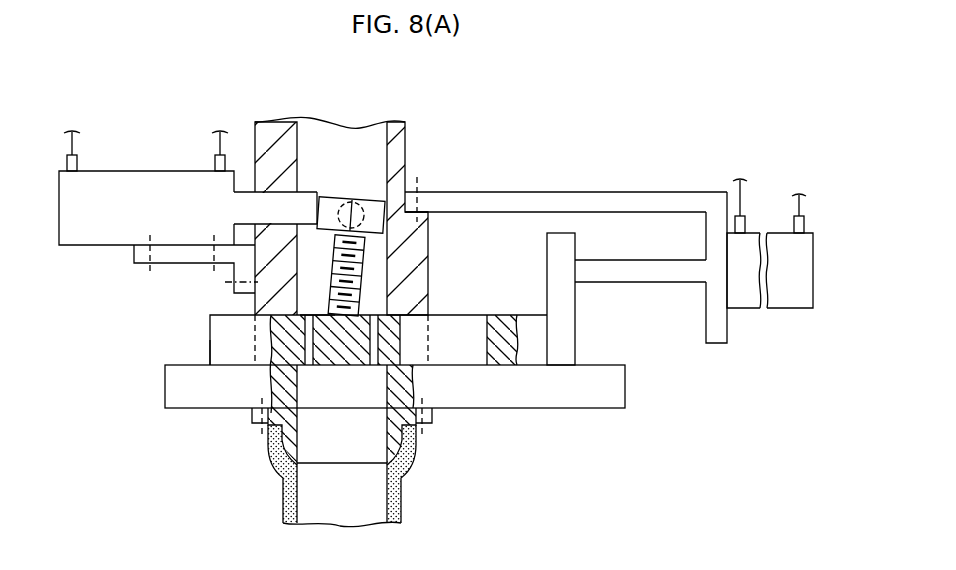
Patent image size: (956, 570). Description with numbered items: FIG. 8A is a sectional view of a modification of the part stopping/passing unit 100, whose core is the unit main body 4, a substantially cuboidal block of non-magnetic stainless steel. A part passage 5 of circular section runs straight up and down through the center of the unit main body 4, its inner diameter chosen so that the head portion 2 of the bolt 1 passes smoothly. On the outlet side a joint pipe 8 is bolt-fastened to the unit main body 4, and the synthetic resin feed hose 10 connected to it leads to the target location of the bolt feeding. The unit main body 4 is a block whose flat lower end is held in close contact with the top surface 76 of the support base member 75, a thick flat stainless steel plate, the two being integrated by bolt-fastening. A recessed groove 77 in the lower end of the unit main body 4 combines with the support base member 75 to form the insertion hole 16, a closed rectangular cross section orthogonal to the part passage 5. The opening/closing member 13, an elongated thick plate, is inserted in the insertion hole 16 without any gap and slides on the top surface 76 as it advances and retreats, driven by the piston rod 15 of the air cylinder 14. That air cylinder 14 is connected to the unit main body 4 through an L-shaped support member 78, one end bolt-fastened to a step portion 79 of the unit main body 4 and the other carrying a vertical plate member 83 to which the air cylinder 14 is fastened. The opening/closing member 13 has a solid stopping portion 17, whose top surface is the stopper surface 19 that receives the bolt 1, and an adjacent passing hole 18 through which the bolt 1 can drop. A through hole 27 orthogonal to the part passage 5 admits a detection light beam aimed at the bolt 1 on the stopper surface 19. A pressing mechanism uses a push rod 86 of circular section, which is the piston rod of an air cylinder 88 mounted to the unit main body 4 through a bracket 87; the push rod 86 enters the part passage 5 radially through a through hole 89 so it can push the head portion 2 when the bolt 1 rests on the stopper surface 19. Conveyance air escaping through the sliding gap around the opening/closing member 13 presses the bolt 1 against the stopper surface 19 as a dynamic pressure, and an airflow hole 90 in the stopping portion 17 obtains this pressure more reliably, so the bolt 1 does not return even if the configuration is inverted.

The bolt 1 is at (370, 253).
The head portion 2 is at (368, 199).
The unit main body 4 is at (253, 136).
The part passage 5 is at (390, 148).
The joint pipe 8 is at (252, 418).
The feed hose 10 is at (284, 505).
The opening/closing member 13 is at (503, 315).
The air cylinder 14 is at (787, 308).
The piston rod 15 is at (660, 260).
The insertion hole 16 is at (268, 330).
The stopping portion 17 is at (343, 357).
The passing hole 18 is at (487, 352).
The stopper surface 19 is at (316, 313).
The through hole 27 is at (340, 205).
The support base member 75 is at (552, 393).
The top surface 76 is at (232, 365).
The recessed groove 77 is at (440, 325).
The support member 78 is at (628, 192).
The step portion 79 is at (428, 212).
The vertical plate member 83 is at (706, 322).
The push rod 86 is at (312, 130).
The bracket 87 is at (165, 263).
The air cylinder 88 is at (147, 171).
The through hole 89 is at (278, 224).
The airflow hole 90 is at (375, 365).
The part stopping/passing unit 100 is at (509, 150).